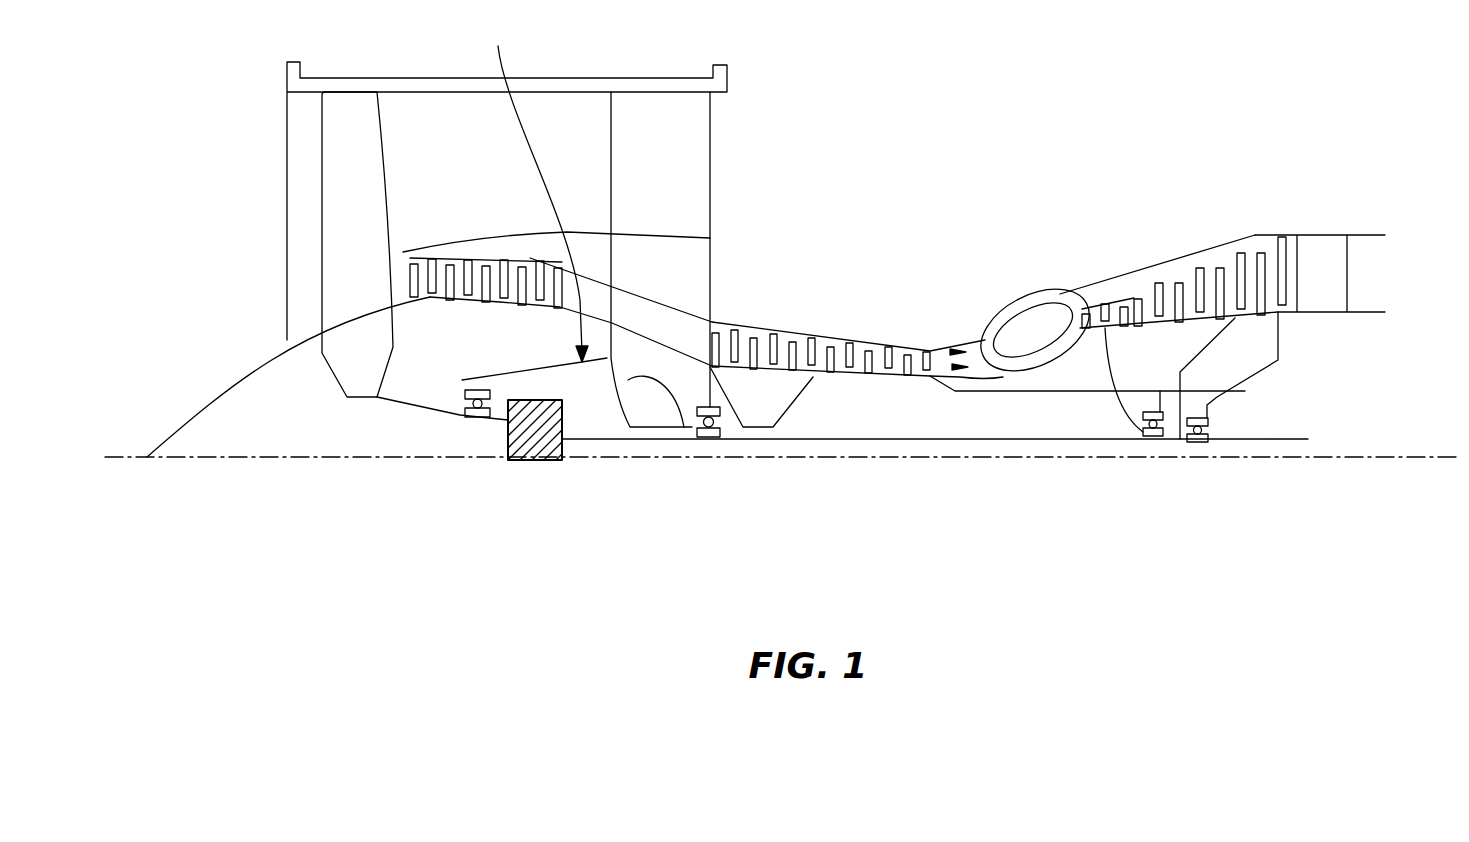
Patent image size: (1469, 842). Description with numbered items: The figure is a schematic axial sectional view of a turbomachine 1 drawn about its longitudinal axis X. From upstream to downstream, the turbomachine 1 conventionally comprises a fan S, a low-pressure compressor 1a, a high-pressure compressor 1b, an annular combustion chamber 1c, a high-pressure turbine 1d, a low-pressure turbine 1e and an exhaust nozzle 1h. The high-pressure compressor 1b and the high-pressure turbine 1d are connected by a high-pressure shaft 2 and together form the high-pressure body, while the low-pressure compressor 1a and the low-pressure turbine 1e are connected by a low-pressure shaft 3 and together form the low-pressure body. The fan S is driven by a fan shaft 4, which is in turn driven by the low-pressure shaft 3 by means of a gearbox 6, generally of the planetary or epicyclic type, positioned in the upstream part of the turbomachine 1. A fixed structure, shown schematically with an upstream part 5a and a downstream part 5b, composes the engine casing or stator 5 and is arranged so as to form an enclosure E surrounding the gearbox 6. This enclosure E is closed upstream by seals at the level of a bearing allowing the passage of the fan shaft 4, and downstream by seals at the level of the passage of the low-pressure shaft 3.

The turbomachine 1 is at (885, 138).
The low-pressure compressor 1a is at (437, 257).
The high-pressure compressor 1b is at (760, 323).
The annular combustion chamber 1c is at (1027, 323).
The high-pressure turbine 1d is at (1087, 307).
The low-pressure turbine 1e is at (1277, 250).
The exhaust nozzle 1h is at (1363, 277).
The high-pressure shaft 2 is at (983, 393).
The low-pressure shaft 3 is at (863, 439).
The fan shaft 4 is at (447, 419).
The engine casing or stator 5 is at (537, 188).
The upstream part 5a is at (535, 368).
The downstream part 5b is at (688, 430).
The gearbox 6 is at (537, 460).
The enclosure E is at (577, 400).
The fan S is at (340, 183).
The engine axis X is at (112, 460).